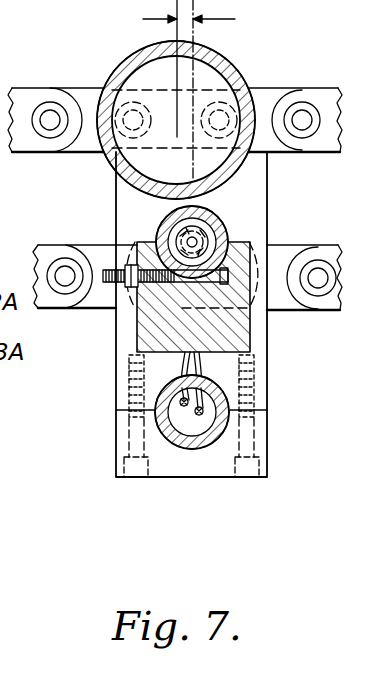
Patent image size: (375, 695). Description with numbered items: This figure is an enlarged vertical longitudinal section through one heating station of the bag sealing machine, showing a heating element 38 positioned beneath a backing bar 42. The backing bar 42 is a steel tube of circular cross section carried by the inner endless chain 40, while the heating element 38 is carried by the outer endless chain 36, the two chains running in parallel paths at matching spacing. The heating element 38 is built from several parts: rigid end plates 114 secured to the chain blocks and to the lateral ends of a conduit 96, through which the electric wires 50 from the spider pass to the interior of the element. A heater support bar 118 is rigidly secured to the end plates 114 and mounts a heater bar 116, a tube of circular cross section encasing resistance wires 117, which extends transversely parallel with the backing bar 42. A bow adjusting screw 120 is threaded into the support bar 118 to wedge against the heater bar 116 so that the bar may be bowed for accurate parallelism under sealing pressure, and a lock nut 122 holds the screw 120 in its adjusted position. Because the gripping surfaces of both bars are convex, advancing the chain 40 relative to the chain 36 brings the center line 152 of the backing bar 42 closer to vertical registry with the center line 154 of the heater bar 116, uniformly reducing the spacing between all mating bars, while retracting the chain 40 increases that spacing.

The center line 152 is at (176, 32).
The center line 154 is at (196, 34).
The heater backing bar 42 is at (118, 70).
The endless chain 40 is at (336, 98).
The heating element 38 is at (243, 207).
The endless chain 36 is at (50, 252).
The bow adjusting screw 120 is at (103, 268).
The lock nut 122 is at (126, 292).
The resistance wire 117 is at (167, 227).
The heater bar 116 is at (226, 222).
The heater support bar 118 is at (240, 336).
The end plate 114 is at (120, 378).
The electric wire 50 is at (205, 411).
The conduit 96 is at (194, 449).